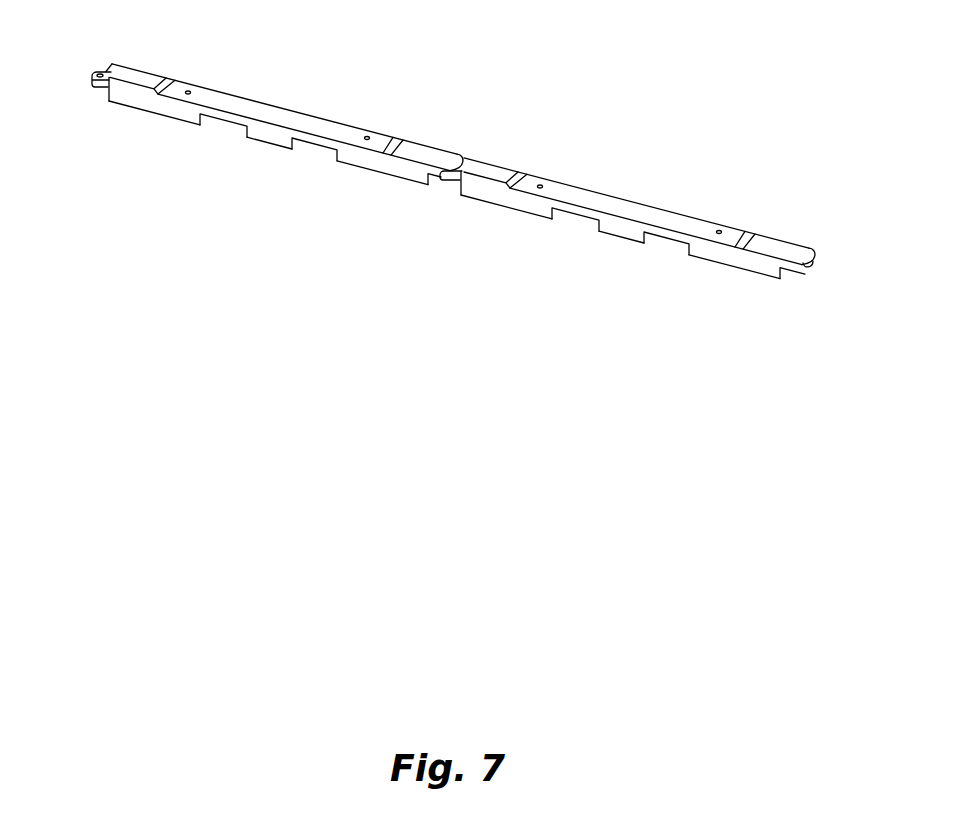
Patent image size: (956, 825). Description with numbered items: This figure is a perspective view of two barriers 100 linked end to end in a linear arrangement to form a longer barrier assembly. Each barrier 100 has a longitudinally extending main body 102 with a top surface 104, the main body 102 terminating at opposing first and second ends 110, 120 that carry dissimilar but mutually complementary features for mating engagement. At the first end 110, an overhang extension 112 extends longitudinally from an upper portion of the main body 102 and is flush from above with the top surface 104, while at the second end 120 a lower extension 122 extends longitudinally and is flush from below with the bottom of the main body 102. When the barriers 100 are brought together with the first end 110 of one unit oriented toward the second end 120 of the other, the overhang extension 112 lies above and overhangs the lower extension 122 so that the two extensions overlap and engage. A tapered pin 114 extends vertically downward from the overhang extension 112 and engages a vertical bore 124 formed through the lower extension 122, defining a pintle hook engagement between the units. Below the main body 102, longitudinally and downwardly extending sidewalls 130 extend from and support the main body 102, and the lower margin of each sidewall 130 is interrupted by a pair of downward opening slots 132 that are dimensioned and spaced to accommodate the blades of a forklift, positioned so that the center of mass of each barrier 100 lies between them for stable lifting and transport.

The barrier 100 is at (330, 38).
The main body 102 is at (318, 125).
The top surface 104 is at (243, 102).
The first end 110 is at (438, 157).
The overhang extension 112 is at (455, 163).
The tapered pin 114 is at (808, 267).
The second end 120 is at (135, 83).
The lower extension 122 is at (102, 88).
The vertical bore 124 is at (100, 71).
The sidewalls 130 is at (162, 108).
The downward opening slots 132 is at (220, 128).